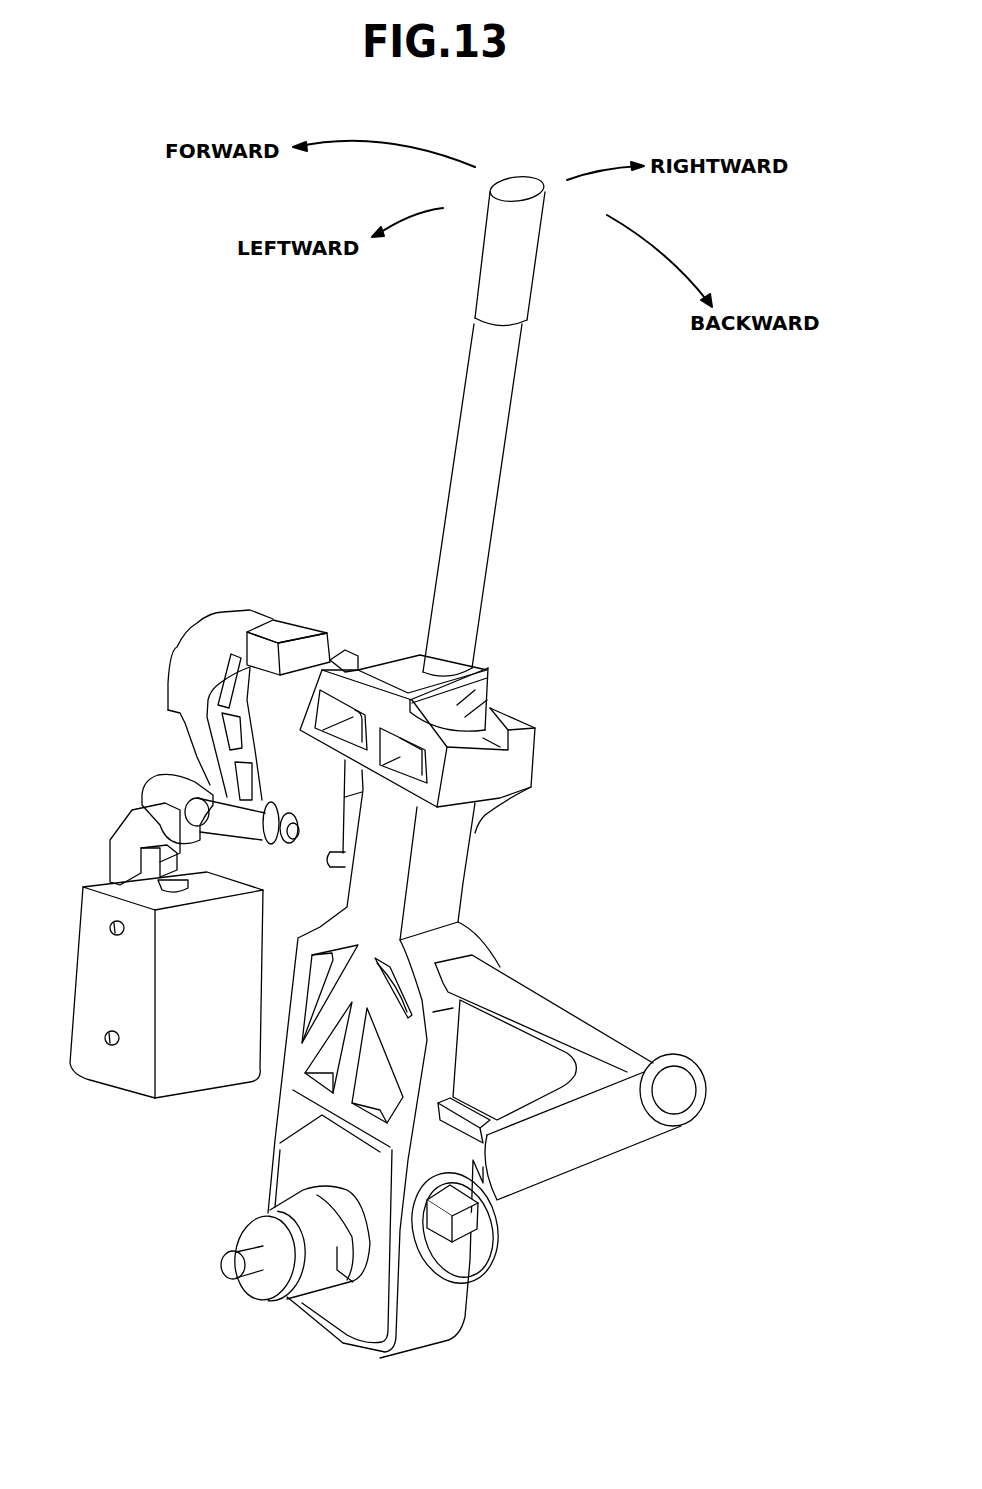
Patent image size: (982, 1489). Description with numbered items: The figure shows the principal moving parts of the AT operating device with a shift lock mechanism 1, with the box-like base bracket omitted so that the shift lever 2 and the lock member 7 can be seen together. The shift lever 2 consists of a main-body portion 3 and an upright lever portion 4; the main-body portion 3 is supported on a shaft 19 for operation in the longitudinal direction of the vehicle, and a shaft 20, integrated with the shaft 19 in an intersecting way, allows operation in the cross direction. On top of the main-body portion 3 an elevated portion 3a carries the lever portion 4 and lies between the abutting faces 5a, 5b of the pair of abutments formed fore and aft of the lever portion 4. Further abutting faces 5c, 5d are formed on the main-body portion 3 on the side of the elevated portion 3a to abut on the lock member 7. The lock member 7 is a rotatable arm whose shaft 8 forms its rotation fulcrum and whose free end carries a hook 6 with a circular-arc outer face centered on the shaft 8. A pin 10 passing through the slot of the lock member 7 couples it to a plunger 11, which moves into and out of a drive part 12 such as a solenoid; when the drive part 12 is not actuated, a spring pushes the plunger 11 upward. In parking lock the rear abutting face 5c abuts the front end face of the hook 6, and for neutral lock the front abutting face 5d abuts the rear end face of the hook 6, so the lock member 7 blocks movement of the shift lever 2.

The AT operating device with a shift lock mechanism 1 is at (210, 535).
The shift lever 2 is at (536, 402).
The main-body portion 3 is at (463, 885).
The elevated portion 3a is at (400, 670).
The lever portion 4 is at (500, 490).
The abutting face 5a is at (490, 702).
The abutting face 5b is at (350, 668).
The abutting face 5c is at (490, 682).
The abutting face 5d is at (377, 660).
The hook 6 is at (287, 627).
The lock member 7 is at (170, 693).
The shaft 8 is at (143, 790).
The pin 10 is at (233, 830).
The plunger 11 is at (177, 887).
The drive part 12 is at (185, 1078).
The shaft 19 is at (224, 1264).
The shaft 20 is at (467, 1228).